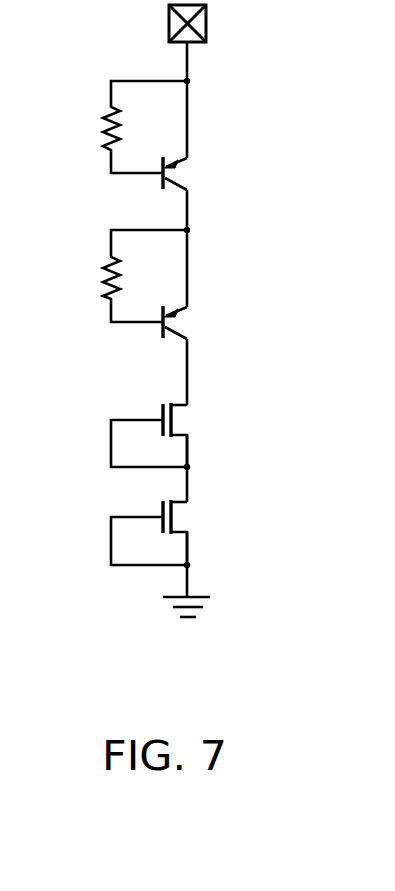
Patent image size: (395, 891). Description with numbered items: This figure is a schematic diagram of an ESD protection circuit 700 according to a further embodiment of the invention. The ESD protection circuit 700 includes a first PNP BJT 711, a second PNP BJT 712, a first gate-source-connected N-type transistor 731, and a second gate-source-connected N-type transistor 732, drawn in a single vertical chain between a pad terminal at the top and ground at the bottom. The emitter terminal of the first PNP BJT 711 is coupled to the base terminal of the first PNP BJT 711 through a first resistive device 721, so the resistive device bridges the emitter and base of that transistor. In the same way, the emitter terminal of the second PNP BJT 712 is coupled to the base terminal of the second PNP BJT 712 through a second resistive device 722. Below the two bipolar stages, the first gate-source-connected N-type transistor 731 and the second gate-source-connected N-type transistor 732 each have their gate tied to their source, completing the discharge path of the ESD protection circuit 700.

The ESD protection circuit 700 is at (100, 643).
The first PNP BJT 711 is at (183, 173).
The second PNP BJT 712 is at (183, 322).
The first resistive device 721 is at (100, 130).
The second resistive device 722 is at (100, 279).
The first gate-source-connected N-type transistor 731 is at (183, 418).
The second gate-source-connected N-type transistor 732 is at (183, 515).